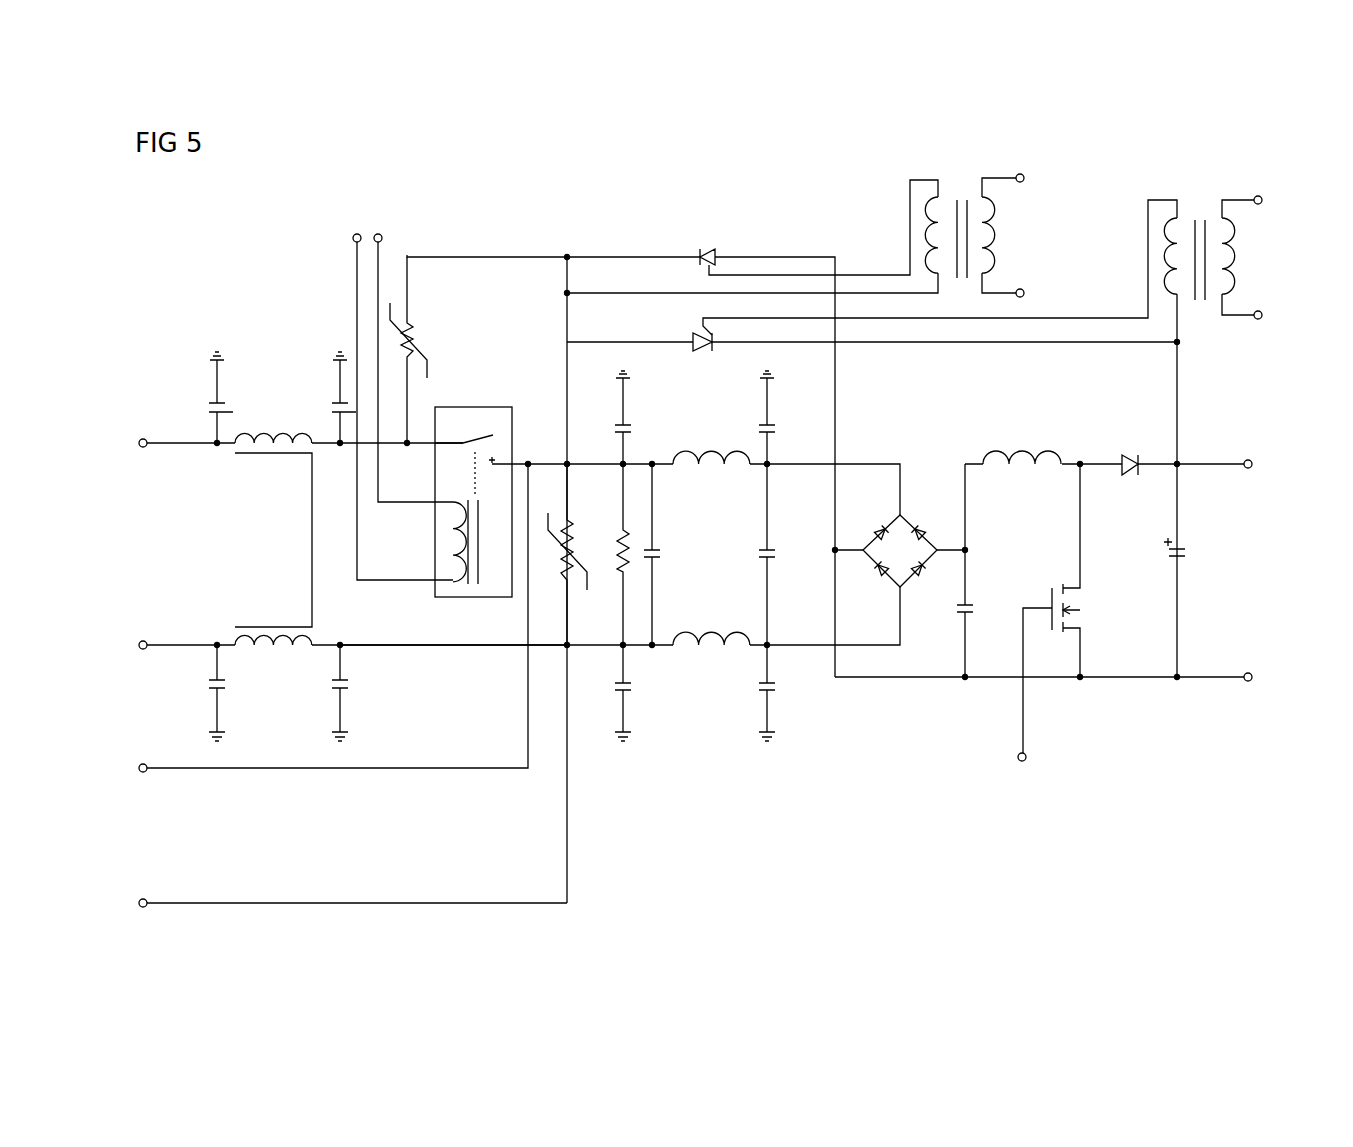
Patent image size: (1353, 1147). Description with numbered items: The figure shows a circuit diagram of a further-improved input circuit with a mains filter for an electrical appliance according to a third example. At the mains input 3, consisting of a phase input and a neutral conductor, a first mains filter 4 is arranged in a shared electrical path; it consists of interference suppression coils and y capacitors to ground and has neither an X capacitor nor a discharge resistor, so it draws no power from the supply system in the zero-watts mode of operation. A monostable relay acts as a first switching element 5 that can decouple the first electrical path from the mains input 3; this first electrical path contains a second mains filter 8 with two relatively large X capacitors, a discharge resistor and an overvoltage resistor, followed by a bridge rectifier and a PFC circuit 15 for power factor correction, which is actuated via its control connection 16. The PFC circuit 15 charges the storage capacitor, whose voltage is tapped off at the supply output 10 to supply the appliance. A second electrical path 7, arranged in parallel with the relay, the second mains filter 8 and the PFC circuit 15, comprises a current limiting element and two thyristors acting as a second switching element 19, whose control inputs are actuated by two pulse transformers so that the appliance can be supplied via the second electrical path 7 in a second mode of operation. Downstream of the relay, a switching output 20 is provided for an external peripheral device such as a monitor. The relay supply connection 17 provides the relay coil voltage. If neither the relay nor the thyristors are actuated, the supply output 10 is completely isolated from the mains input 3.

The mains input 3 is at (140, 538).
The first mains filter 4 is at (437, 667).
The first switching element 5 is at (525, 364).
The second electrical path 7 is at (510, 213).
The second mains filter 8 is at (666, 772).
The supply output 10 is at (1239, 564).
The PFC circuit 15 is at (935, 687).
The control connection 16 is at (985, 806).
The relay supply voltage 17 is at (311, 263).
The second switching element 19 is at (628, 200).
The switching output 20 is at (160, 835).